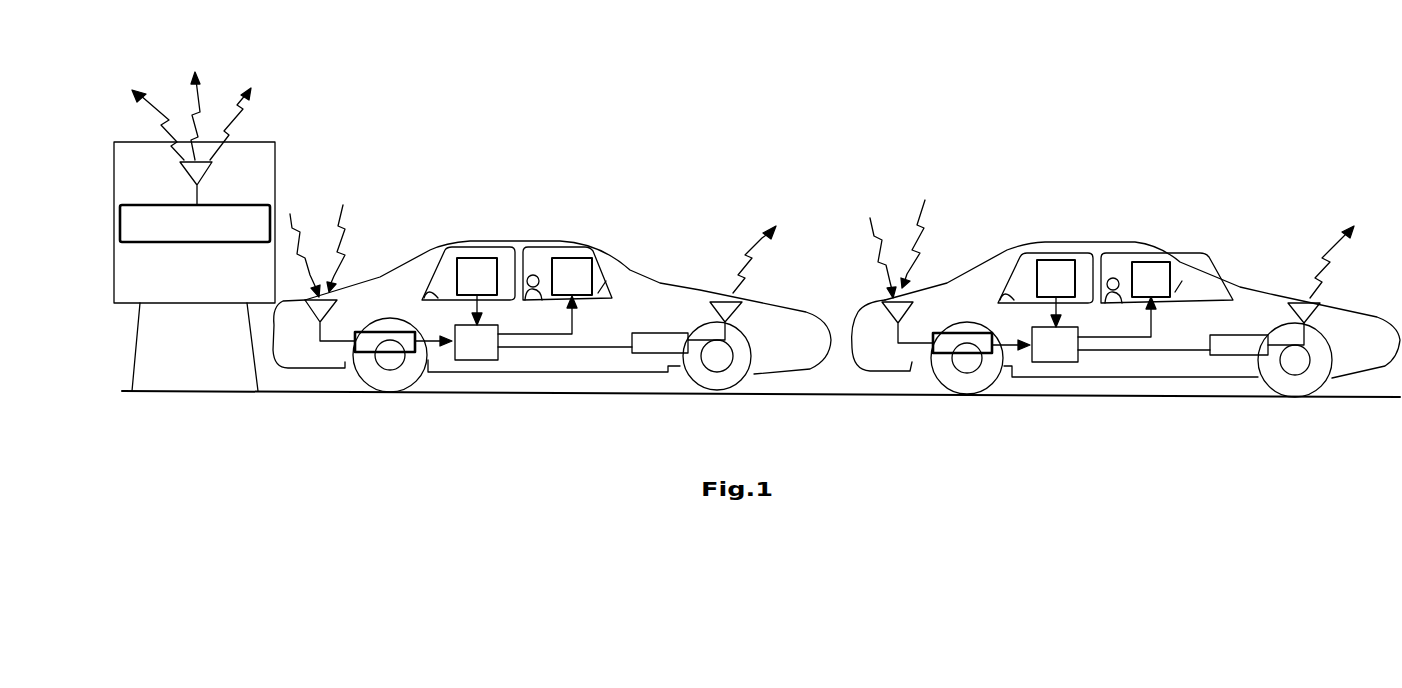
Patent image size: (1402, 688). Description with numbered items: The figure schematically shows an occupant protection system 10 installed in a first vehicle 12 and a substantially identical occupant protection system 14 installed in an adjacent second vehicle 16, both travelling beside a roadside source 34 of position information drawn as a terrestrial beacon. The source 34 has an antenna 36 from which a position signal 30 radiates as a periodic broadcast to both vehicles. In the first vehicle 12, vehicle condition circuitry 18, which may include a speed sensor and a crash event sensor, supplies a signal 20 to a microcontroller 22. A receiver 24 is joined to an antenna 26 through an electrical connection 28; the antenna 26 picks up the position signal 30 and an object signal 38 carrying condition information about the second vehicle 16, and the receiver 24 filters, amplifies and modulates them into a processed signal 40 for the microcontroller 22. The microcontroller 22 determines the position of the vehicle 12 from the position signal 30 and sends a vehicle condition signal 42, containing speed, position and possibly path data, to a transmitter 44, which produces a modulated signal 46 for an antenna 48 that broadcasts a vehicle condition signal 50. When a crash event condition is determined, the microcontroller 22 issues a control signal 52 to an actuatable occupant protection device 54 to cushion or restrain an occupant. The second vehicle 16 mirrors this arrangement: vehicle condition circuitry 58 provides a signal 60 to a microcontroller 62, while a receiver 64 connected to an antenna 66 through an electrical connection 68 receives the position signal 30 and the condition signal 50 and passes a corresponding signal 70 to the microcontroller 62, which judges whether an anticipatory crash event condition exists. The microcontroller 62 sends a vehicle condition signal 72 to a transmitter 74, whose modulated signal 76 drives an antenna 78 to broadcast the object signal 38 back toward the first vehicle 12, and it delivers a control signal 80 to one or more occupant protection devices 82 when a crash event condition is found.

The occupant protection system 10 is at (1126, 302).
The first vehicle 12 is at (1073, 243).
The occupant protection system 14 is at (552, 296).
The second vehicle 16 is at (593, 247).
The vehicle condition circuitry 18 is at (1056, 258).
The signal 20 is at (1062, 312).
The microcontroller 22 is at (1058, 364).
The receiver 24 is at (965, 353).
The antenna 26 is at (908, 323).
The electrical connection 28 is at (917, 367).
The position signal 30 is at (246, 107).
The source of position information 34 is at (277, 168).
The antenna 36 is at (189, 175).
The object signal 38 is at (757, 247).
The processed signal 40 is at (1010, 343).
The vehicle condition signal 42 is at (1150, 352).
The transmitter 44 is at (1230, 357).
The modulated signal 46 is at (1318, 343).
The antenna 48 is at (1317, 318).
The vehicle condition signal 50 is at (343, 223).
The control signal 52 is at (1155, 321).
The actuatable occupant protection device 54 is at (1175, 278).
The vehicle condition circuitry 58 is at (455, 262).
The signal 60 is at (481, 305).
The microcontroller 62 is at (477, 362).
The receiver 64 is at (385, 370).
The antenna 66 is at (334, 308).
The electrical connection 68 is at (278, 369).
The signal 70 is at (440, 352).
The vehicle condition signal 72 is at (575, 350).
The transmitter 74 is at (650, 355).
The modulated signal 76 is at (754, 353).
The antenna 78 is at (742, 315).
The control signal 80 is at (540, 349).
The occupant protection devices 82 is at (600, 275).